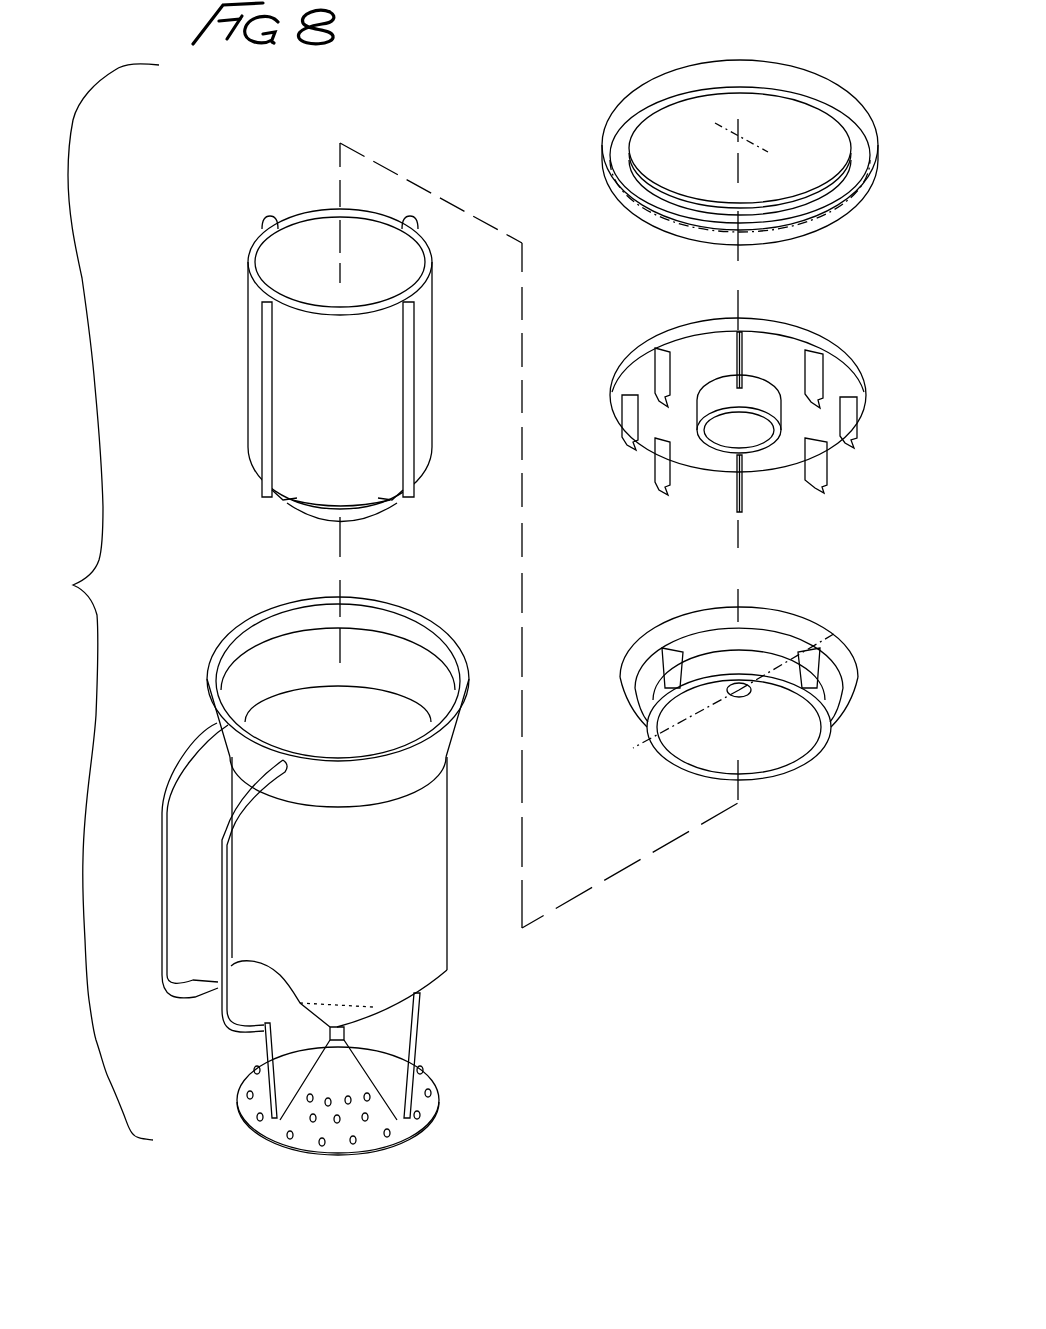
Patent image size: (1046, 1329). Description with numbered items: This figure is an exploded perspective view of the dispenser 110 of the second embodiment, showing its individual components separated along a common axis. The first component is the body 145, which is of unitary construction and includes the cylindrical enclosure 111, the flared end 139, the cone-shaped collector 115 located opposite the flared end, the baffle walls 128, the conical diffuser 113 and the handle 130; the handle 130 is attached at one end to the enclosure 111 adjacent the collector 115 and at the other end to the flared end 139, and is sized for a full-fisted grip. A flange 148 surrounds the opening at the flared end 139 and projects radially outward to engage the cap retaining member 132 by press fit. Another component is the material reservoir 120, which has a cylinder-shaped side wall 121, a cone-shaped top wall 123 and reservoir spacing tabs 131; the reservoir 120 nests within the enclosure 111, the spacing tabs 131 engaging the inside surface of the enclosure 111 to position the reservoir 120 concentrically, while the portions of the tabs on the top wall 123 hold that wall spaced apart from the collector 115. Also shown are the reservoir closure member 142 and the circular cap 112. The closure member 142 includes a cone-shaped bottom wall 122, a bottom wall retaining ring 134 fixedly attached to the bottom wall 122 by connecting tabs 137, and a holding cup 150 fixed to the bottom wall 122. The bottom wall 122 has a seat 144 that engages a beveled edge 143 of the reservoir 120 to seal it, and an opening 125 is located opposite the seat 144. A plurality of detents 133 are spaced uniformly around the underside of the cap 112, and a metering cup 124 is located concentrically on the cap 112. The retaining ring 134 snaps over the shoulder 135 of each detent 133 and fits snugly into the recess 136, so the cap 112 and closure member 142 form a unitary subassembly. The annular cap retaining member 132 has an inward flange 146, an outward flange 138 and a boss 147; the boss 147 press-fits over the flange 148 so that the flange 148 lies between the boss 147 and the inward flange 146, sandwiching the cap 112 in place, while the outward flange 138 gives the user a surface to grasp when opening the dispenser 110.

The dispenser 110 is at (89, 602).
The cylindrical enclosure 111 is at (448, 910).
The circular cap 112 is at (752, 426).
The conical diffuser 113 is at (425, 1127).
The cone-shaped collector 115 is at (323, 1018).
The material reservoir 120 is at (313, 388).
The side wall 121 is at (248, 336).
The bottom wall 122 is at (746, 722).
The top wall 123 is at (343, 508).
The metering cup 124 is at (770, 455).
The opening 125 is at (745, 686).
The baffle walls 128 is at (408, 1040).
The handle 130 is at (190, 743).
The reservoir spacing tabs 131 is at (264, 456).
The cap retaining member 132 is at (736, 163).
The detents 133 is at (655, 460).
The bottom wall retaining ring 134 is at (812, 652).
The shoulder 135 is at (850, 443).
The recess 136 is at (846, 434).
The connecting tabs 137 is at (835, 697).
The outward flange 138 is at (877, 166).
The flared end 139 is at (412, 763).
The reservoir closure member 142 is at (658, 745).
The beveled edge 143 is at (420, 263).
The seat 144 is at (695, 765).
The body 145 is at (316, 867).
The inward flange 146 is at (653, 172).
The boss 147 is at (800, 215).
The flange 148 is at (214, 647).
The holding cup 150 is at (710, 648).